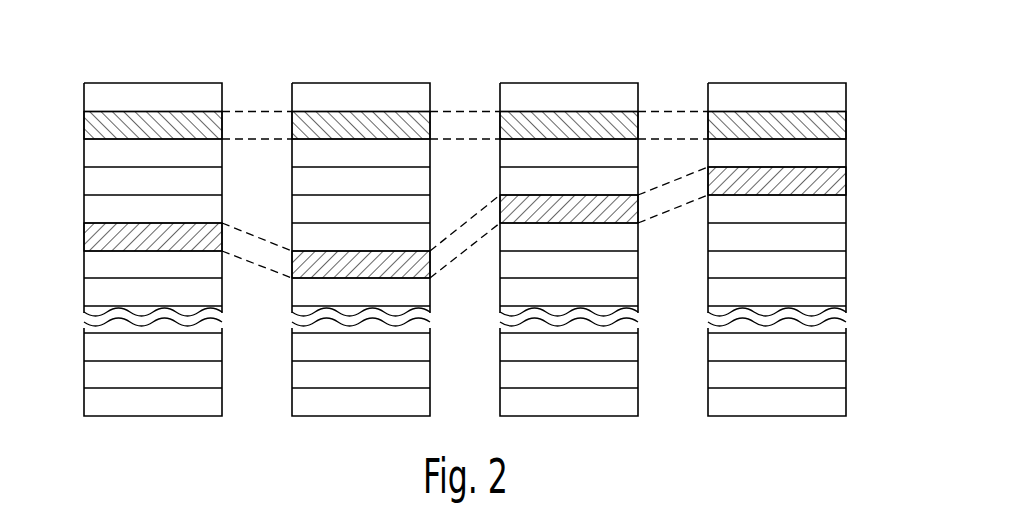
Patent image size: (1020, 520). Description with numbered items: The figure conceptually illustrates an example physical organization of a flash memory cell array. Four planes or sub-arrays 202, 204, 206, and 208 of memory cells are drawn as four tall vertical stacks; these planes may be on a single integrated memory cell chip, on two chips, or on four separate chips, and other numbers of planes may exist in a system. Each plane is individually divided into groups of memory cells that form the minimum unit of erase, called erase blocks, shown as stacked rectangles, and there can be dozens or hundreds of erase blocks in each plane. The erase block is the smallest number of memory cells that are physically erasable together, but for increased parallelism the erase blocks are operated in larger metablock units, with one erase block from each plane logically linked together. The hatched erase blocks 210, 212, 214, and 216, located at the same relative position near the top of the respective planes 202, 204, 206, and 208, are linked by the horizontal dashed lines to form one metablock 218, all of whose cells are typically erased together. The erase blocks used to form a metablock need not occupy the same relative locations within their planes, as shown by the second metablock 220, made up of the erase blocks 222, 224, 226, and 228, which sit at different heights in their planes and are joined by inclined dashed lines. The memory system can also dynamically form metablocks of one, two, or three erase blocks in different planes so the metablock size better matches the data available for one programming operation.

The plane 202 is at (150, 78).
The plane 204 is at (360, 78).
The plane 206 is at (568, 78).
The plane 208 is at (787, 78).
The erase block 210 is at (133, 128).
The erase block 212 is at (338, 128).
The erase block 214 is at (546, 128).
The erase block 216 is at (806, 124).
The metablock 218 is at (680, 122).
The second metablock 220 is at (673, 192).
The erase block 222 is at (128, 236).
The erase block 224 is at (333, 265).
The erase block 226 is at (553, 206).
The erase block 228 is at (806, 175).